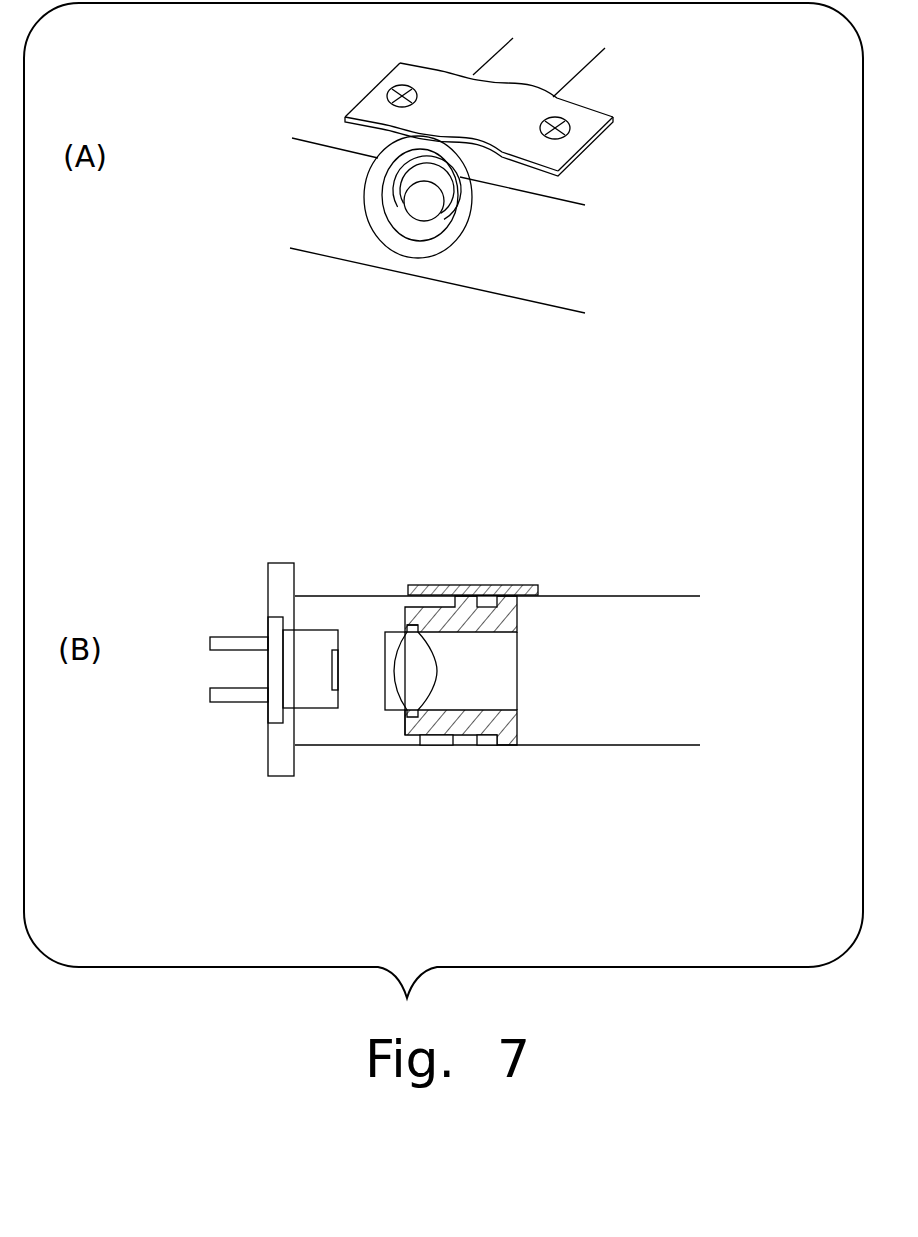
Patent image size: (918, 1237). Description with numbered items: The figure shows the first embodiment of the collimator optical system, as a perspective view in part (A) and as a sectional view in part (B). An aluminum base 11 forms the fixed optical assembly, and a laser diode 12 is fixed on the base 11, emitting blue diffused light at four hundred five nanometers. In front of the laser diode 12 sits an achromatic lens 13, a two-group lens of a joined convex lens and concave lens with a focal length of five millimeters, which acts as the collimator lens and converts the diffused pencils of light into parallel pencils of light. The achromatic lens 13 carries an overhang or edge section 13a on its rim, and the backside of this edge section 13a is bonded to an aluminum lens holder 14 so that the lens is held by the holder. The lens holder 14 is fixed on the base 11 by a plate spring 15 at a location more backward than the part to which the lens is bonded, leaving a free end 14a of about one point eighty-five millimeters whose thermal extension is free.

The base 11 is at (530, 280).
The laser diode 12 is at (275, 768).
The achromatic lens 13 is at (420, 201).
The edge section 13a is at (407, 626).
The lens holder 14 is at (428, 232).
The free end 14a is at (422, 730).
The plate spring 15 is at (585, 123).